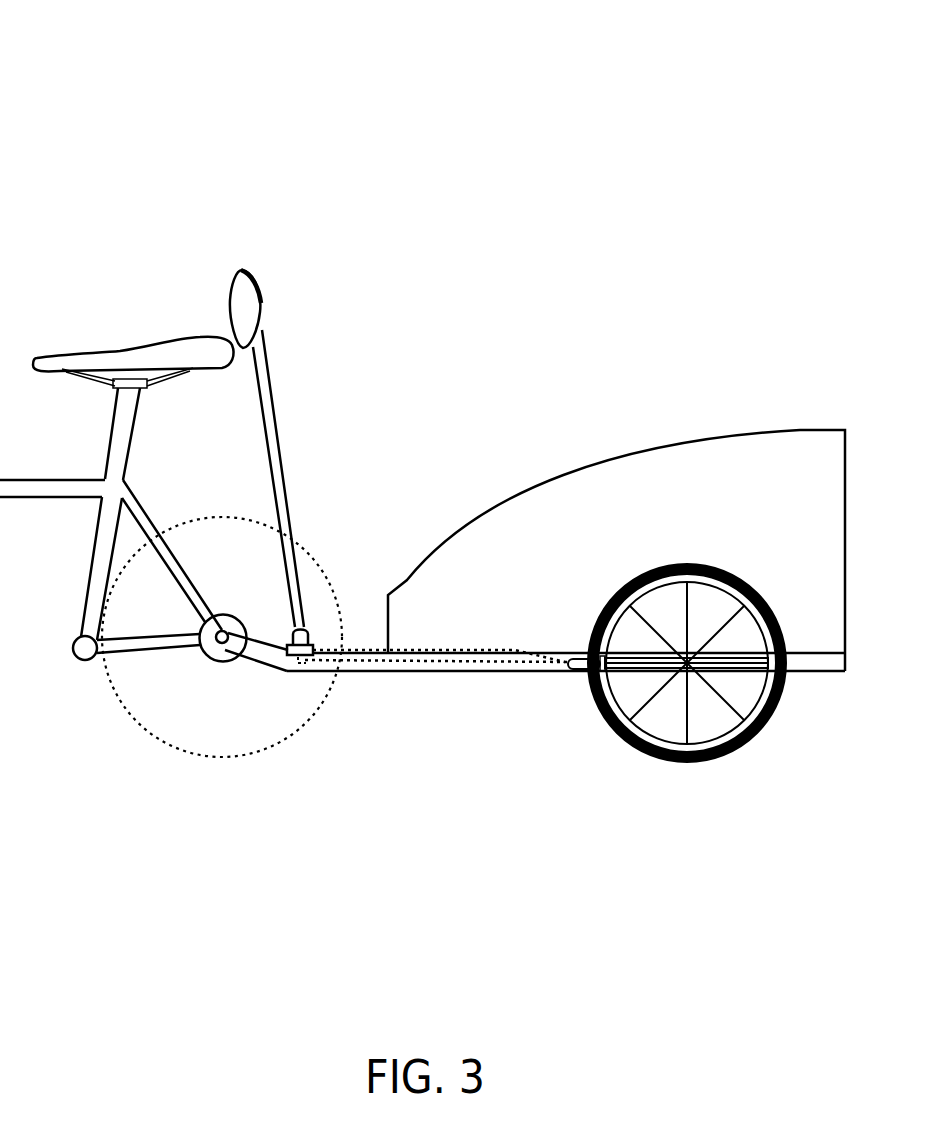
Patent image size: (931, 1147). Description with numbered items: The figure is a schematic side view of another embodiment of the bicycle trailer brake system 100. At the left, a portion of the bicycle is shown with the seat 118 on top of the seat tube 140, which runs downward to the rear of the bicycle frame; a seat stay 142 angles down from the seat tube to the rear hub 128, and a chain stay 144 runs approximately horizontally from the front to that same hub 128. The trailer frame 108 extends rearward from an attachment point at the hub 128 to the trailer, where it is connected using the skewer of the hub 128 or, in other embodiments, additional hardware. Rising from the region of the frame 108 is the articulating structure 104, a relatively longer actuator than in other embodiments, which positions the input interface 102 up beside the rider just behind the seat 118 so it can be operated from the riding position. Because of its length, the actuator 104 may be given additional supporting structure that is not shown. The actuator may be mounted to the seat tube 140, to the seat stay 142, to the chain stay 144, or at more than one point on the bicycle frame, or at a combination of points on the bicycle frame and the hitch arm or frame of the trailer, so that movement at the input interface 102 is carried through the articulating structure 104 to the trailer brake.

The bicycle trailer brake system 100 is at (162, 51).
The input interface 102 is at (234, 287).
The articulating structure 104 is at (272, 465).
The frame 108 is at (257, 667).
The seat 118 is at (157, 345).
The hub 128 is at (222, 615).
The seat tube 140 is at (92, 557).
The seat stay 142 is at (173, 548).
The chain stay 144 is at (133, 653).